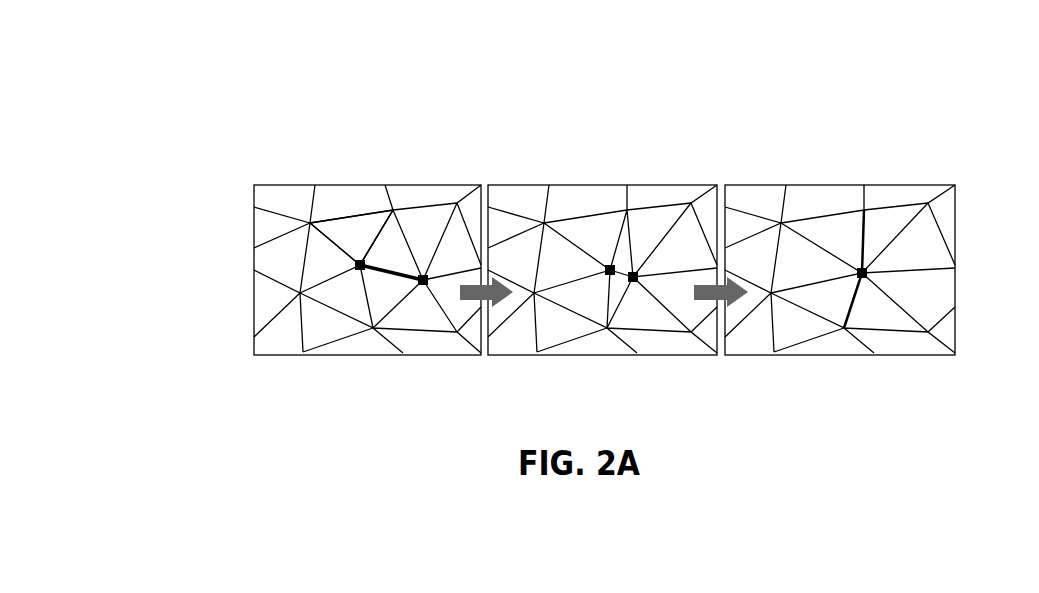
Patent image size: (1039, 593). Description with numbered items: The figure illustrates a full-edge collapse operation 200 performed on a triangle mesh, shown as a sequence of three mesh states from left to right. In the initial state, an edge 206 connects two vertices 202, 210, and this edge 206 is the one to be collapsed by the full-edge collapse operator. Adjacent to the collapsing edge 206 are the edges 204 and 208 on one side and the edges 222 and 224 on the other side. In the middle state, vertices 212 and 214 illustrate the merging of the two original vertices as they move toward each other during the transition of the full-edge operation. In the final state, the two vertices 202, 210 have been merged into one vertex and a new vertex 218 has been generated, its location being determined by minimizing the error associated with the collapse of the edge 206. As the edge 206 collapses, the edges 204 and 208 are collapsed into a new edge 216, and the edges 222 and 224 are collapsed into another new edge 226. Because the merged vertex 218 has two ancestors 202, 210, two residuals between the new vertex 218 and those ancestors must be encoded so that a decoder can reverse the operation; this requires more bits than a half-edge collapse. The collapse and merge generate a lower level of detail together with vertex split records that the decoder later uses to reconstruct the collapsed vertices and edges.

The full-edge collapse operation 200 is at (140, 210).
The vertex 202 is at (358, 258).
The edge 204 is at (378, 222).
The edge 206 is at (388, 266).
The edge 208 is at (416, 249).
The vertex 210 is at (424, 274).
The vertex 212 is at (609, 263).
The vertex 214 is at (639, 272).
The edge 216 is at (859, 241).
The new vertex 218 is at (864, 268).
The edge 222 is at (363, 293).
The edge 224 is at (402, 303).
The edge 226 is at (857, 302).